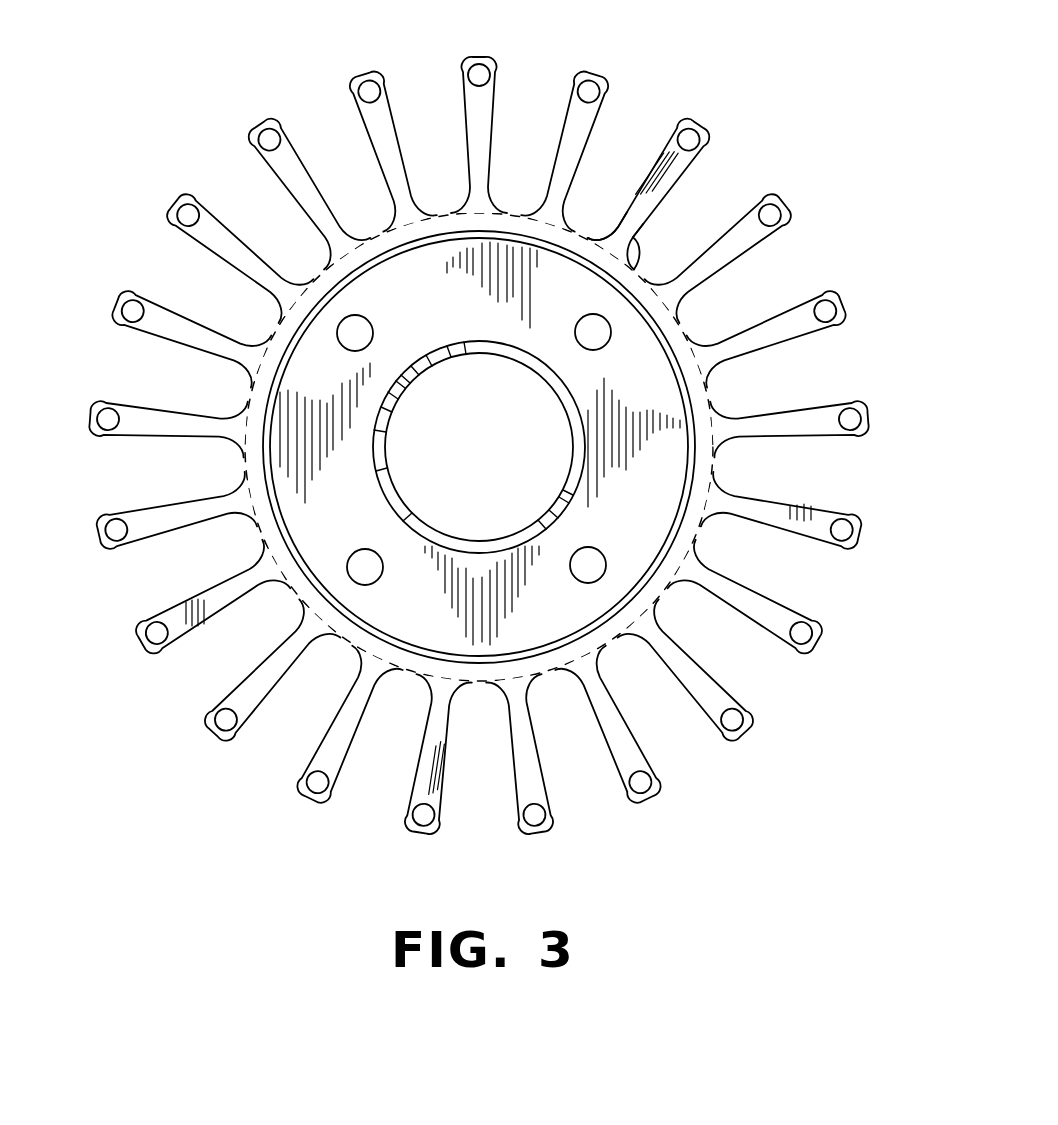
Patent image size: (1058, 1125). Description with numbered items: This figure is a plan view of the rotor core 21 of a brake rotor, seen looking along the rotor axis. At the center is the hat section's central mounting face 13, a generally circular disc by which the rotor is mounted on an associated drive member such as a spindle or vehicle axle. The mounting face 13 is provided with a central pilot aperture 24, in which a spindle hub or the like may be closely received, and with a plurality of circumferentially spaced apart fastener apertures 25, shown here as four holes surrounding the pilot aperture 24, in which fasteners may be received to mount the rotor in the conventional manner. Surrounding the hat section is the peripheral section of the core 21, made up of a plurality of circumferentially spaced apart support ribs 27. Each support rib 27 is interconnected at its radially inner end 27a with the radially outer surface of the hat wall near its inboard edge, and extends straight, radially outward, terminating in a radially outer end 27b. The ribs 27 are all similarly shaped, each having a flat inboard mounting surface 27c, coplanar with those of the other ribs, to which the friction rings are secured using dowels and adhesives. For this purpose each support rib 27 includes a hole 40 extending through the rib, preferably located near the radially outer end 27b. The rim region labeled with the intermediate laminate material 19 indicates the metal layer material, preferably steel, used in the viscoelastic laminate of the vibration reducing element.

The central mounting face 13 is at (474, 302).
The intermediate laminate material 19 is at (438, 225).
The core 21 is at (671, 87).
The central pilot aperture 24 is at (402, 503).
The fastener apertures 25 is at (607, 560).
The support ribs 27 is at (787, 318).
The radially inner ends 27a is at (630, 253).
The radially outer ends 27b is at (710, 136).
The flat inboard mounting surface 27c is at (764, 343).
The hole 40 is at (853, 537).